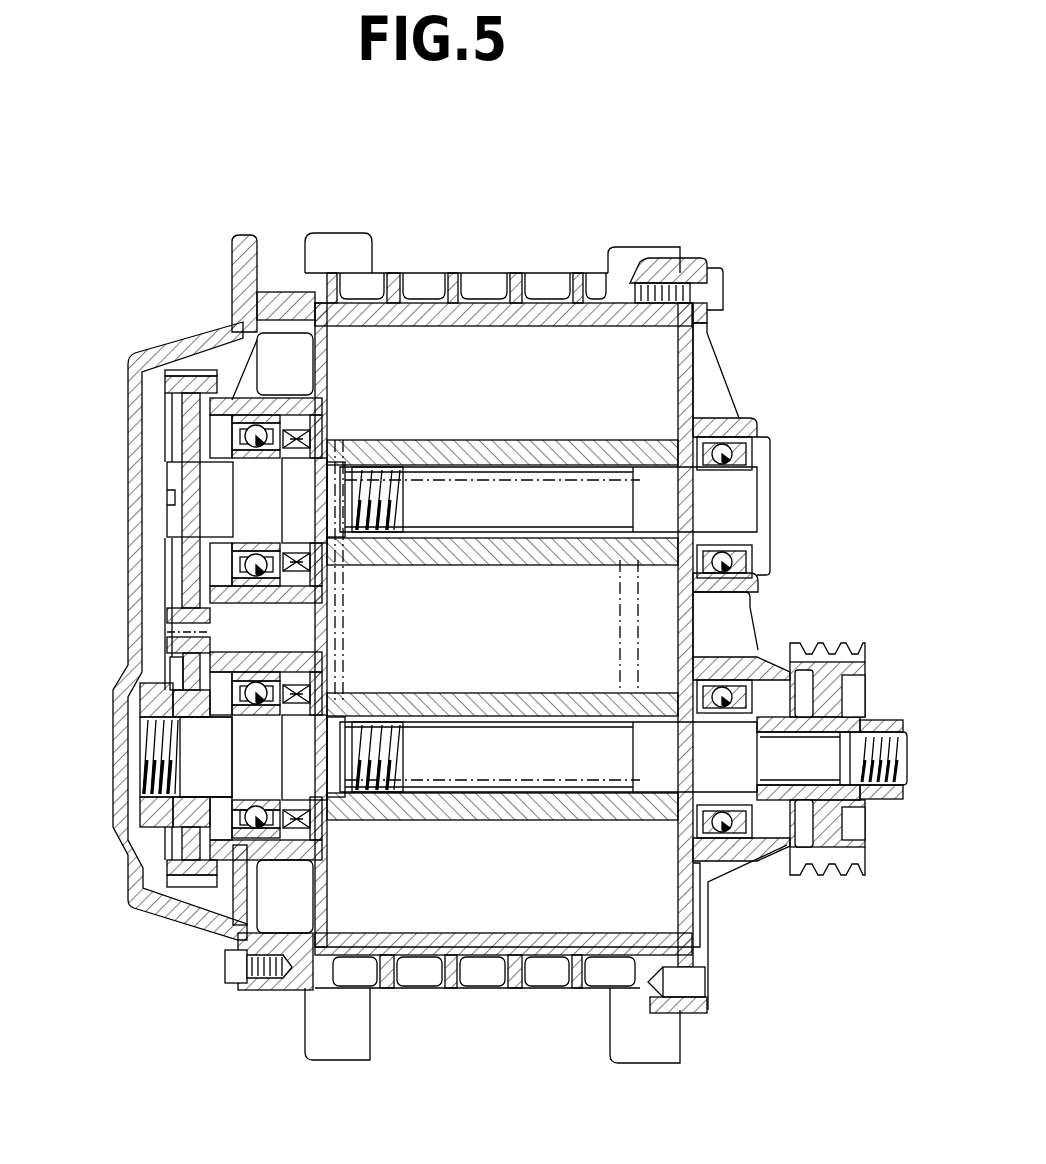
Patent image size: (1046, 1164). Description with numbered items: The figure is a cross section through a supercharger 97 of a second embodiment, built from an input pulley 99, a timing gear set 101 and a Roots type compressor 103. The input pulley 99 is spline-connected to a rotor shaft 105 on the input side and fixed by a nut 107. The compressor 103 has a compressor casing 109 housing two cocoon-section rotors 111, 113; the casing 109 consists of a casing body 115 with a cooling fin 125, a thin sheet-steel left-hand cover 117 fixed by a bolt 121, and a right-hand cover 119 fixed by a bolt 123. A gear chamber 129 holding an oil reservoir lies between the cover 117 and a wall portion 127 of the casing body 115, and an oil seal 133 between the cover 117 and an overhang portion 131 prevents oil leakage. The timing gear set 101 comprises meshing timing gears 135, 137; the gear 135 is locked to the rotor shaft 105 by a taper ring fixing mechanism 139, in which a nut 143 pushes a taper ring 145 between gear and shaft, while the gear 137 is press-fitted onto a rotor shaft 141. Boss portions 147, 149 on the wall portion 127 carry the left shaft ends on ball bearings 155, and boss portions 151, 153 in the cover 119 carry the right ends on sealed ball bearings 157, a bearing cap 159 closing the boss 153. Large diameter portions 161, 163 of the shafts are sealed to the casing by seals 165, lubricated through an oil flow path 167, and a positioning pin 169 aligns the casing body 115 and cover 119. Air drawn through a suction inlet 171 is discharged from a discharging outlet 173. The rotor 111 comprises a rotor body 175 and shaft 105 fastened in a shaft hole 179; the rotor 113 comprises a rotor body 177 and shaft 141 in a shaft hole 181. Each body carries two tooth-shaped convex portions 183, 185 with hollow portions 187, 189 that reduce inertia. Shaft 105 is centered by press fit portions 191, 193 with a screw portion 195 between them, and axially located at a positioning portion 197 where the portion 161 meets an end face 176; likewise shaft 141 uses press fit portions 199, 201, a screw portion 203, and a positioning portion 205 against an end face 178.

The supercharger 97 is at (725, 185).
The input pulley 99 is at (812, 652).
The timing gear set 101 is at (190, 365).
The Roots type compressor 103 is at (518, 245).
The rotor shaft 105 is at (645, 770).
The nut 107 is at (885, 735).
The compressor casing 109 is at (668, 247).
The rotor 111 is at (722, 920).
The rotor 113 is at (712, 385).
The casing body 115 is at (475, 270).
The left-hand cover 117 is at (126, 368).
The right-hand cover 119 is at (692, 262).
The bolt 121 is at (230, 978).
The bolt 123 is at (725, 270).
The cooling fin 125 is at (403, 292).
The wall portion 127 is at (330, 355).
The gear chamber 129 is at (150, 555).
The overhang portion 131 is at (258, 290).
The oil seal 133 is at (256, 300).
The timing gear 135 is at (160, 915).
The timing gear 137 is at (162, 355).
The taper ring fixing mechanism 139 is at (110, 655).
The rotor shaft 141 is at (680, 518).
The nut 143 is at (140, 737).
The taper ring 145 is at (190, 712).
The boss portion 147 is at (265, 862).
The boss portion 149 is at (256, 412).
The boss portion 151 is at (740, 864).
The boss portion 153 is at (757, 418).
The ball bearing 155 is at (258, 455).
The ball bearing 157 is at (725, 462).
The bearing cap 159 is at (772, 452).
The large diameter portion 161 is at (320, 746).
The large diameter portion 163 is at (320, 510).
The seal 165 is at (258, 555).
The oil flow path 167 is at (235, 905).
The positioning pin 169 is at (700, 1002).
The suction inlet 171 is at (500, 780).
The discharging outlet 173 is at (475, 565).
The rotor body 175 is at (538, 975).
The end face 176 is at (340, 820).
The rotor body 177 is at (545, 300).
The end face 178 is at (300, 440).
The shaft hole 179 is at (520, 728).
The shaft hole 181 is at (475, 530).
The tooth-shaped convex portion 183 is at (592, 935).
The tooth-shaped convex portion 185 is at (548, 322).
The hollow portion 187 is at (535, 912).
The hollow portion 189 is at (455, 368).
The press fit portion 191 is at (345, 805).
The press fit portion 193 is at (655, 800).
The screw portion 195 is at (405, 800).
The positioning portion 197 is at (340, 702).
The press fit portion 199 is at (335, 457).
The press fit portion 201 is at (660, 465).
The screw portion 203 is at (360, 467).
The positioning portion 205 is at (340, 547).